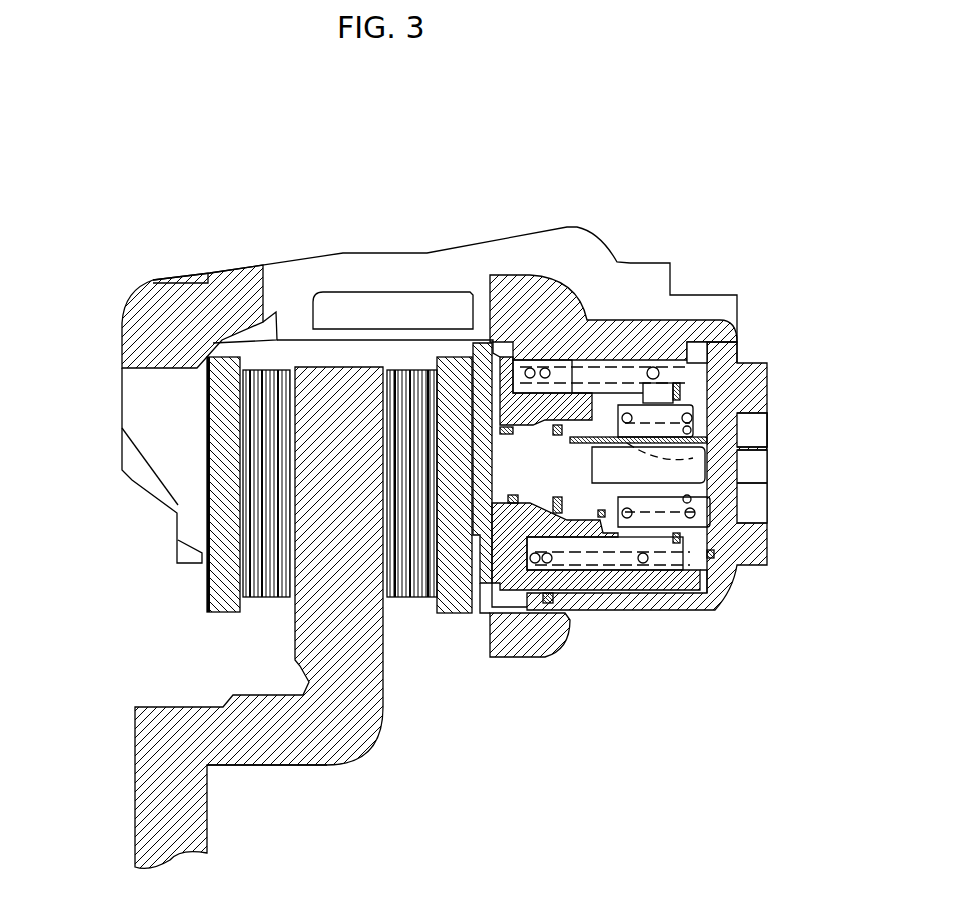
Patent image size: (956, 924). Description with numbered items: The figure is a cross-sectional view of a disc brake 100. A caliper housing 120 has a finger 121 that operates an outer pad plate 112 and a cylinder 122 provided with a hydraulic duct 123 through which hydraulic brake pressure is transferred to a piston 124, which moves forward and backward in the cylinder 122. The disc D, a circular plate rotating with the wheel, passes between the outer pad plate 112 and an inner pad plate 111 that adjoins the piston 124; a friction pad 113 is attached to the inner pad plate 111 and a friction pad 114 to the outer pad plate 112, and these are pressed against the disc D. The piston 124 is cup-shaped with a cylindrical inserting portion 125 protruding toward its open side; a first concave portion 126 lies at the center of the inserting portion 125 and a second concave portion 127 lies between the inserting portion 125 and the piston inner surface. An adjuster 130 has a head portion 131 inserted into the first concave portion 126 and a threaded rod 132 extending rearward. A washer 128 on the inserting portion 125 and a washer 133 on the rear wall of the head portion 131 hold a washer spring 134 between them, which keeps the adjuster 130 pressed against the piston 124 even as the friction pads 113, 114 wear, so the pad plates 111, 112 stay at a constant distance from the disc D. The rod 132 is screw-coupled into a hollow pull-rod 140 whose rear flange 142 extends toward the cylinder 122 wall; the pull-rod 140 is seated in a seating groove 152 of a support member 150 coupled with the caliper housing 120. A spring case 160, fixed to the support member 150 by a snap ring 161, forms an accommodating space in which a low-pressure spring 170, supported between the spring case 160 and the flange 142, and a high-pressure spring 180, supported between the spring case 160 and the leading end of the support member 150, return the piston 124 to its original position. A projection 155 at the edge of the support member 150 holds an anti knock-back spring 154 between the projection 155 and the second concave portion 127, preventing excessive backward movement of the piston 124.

The disc brake 100 is at (704, 192).
The caliper housing 120 is at (390, 244).
The finger 121 is at (122, 392).
The cylinder 122 is at (767, 373).
The hydraulic duct 123 is at (723, 325).
The piston 124 is at (500, 505).
The inserting portion 125 is at (610, 400).
The first concave portion 126 is at (478, 345).
The second concave portion 127 is at (508, 330).
The washer 128 is at (655, 355).
The adjuster 130 is at (503, 503).
The head portion 131 is at (560, 515).
The rod 132 is at (622, 590).
The washer 133 is at (555, 330).
The washer spring 134 is at (645, 362).
The pull-rod 140 is at (747, 527).
The flange 142 is at (743, 497).
The support member 150 is at (767, 420).
The seating groove 152 is at (753, 472).
The anti knock-back spring 154 is at (585, 590).
The projection 155 is at (683, 587).
The spring case 160 is at (647, 557).
The snap ring 161 is at (712, 553).
The low-pressure spring 170 is at (753, 450).
The high-pressure spring 180 is at (757, 413).
The inner pad plate 111 is at (457, 612).
The outer pad plate 112 is at (222, 612).
The friction pad 113 is at (412, 593).
The friction pad 114 is at (340, 512).
The disc D is at (363, 747).